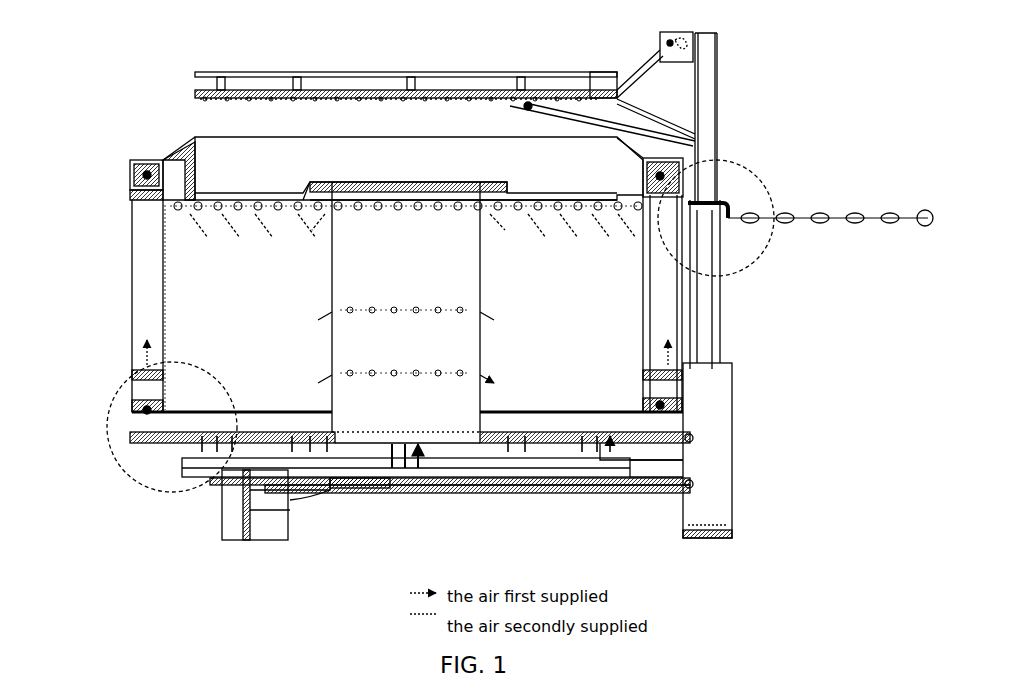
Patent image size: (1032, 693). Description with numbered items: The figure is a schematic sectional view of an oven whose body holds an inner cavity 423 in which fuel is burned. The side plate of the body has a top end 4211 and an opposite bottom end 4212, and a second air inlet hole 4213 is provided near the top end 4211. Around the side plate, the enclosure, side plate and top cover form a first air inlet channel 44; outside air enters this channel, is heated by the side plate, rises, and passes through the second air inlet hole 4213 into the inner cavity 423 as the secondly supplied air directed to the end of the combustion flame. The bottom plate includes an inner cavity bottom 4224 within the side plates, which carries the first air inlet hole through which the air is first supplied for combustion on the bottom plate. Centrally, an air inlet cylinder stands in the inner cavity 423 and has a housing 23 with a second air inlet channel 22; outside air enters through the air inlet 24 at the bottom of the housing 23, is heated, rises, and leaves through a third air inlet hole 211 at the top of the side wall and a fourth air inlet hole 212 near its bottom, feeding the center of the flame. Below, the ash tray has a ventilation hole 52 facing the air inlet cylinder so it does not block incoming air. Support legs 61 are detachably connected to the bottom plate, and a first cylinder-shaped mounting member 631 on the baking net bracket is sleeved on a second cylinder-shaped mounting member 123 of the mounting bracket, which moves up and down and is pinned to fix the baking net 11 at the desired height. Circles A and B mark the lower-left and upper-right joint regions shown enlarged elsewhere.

The baking net 11 is at (457, 73).
The second cylinder-shaped mounting member 123 is at (704, 111).
The second air inlet channel 22 is at (356, 185).
The third air inlet hole 211 is at (363, 235).
The fourth air inlet hole 212 is at (477, 307).
The housing 23 is at (530, 444).
The air inlet 24 is at (444, 476).
The ventilation hole 52 is at (398, 495).
The support legs 61 is at (723, 444).
The first cylinder-shaped mounting member 631 is at (720, 320).
The top end 4211 is at (129, 176).
The bottom end 4212 is at (668, 402).
The second air inlet hole 4213 is at (190, 155).
The inner cavity bottom 4224 is at (540, 460).
The inner cavity 423 is at (180, 269).
The first air inlet channel 44 is at (147, 311).
The detail region A is at (132, 384).
The detail region B is at (760, 176).